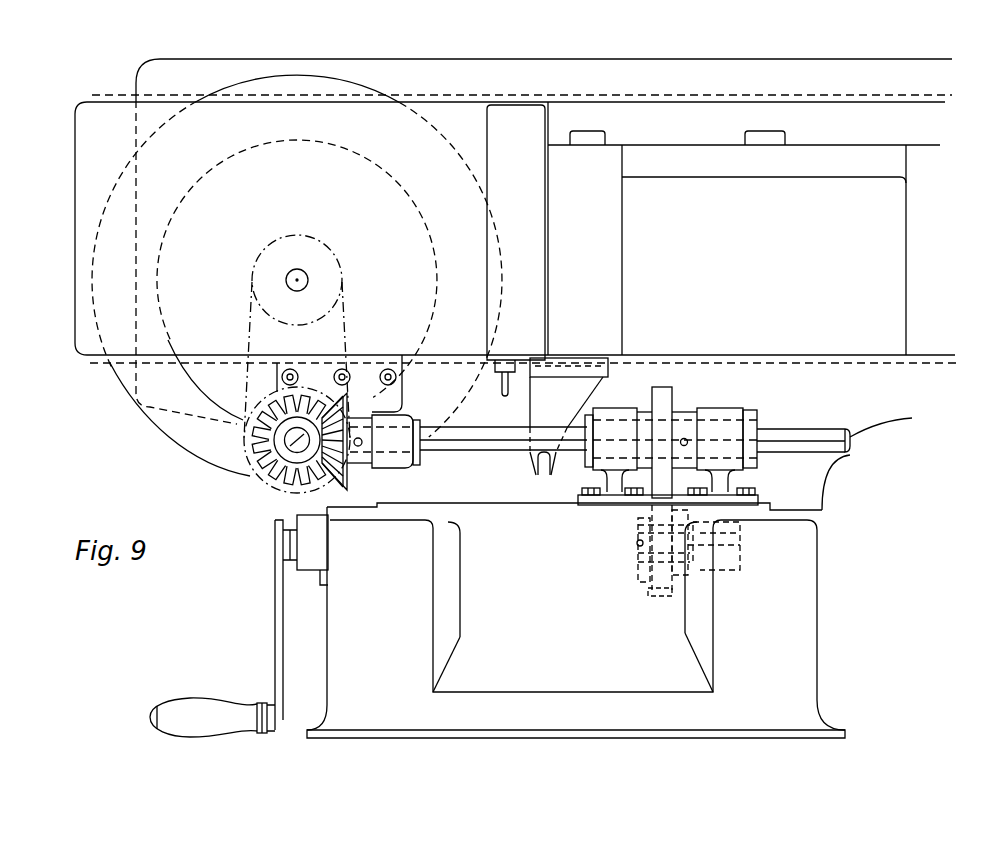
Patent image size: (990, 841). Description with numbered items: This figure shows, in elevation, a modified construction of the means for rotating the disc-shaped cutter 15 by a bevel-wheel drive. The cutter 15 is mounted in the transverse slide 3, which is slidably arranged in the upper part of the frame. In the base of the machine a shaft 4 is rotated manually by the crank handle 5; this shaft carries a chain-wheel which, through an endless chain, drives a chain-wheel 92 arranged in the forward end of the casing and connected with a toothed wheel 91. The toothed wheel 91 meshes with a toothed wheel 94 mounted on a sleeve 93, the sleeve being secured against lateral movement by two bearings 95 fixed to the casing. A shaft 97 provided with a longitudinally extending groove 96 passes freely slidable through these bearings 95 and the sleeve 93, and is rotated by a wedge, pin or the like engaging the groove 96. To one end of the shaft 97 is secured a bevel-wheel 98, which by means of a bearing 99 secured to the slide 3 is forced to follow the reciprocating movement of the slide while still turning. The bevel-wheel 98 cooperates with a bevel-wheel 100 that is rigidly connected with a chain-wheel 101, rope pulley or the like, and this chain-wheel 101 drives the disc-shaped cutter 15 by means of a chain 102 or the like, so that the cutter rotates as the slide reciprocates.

The transverse slide 3 is at (78, 178).
The shaft 4 is at (292, 563).
The crank handle 5 is at (192, 702).
The cutter disc 15 is at (183, 450).
The toothed wheel 91 is at (656, 594).
The chain-wheel 92 is at (680, 567).
The sleeve 93 is at (732, 413).
The toothed wheel 94 is at (663, 405).
The bearing 95 is at (597, 467).
The longitudinally extending groove 96 is at (472, 442).
The shaft 97 is at (512, 448).
The bevel-wheel 98 is at (345, 474).
The bearing 99 is at (397, 422).
The bevel-wheel 100 is at (275, 478).
The chain-wheel 101 is at (253, 468).
The chain 102 is at (248, 331).